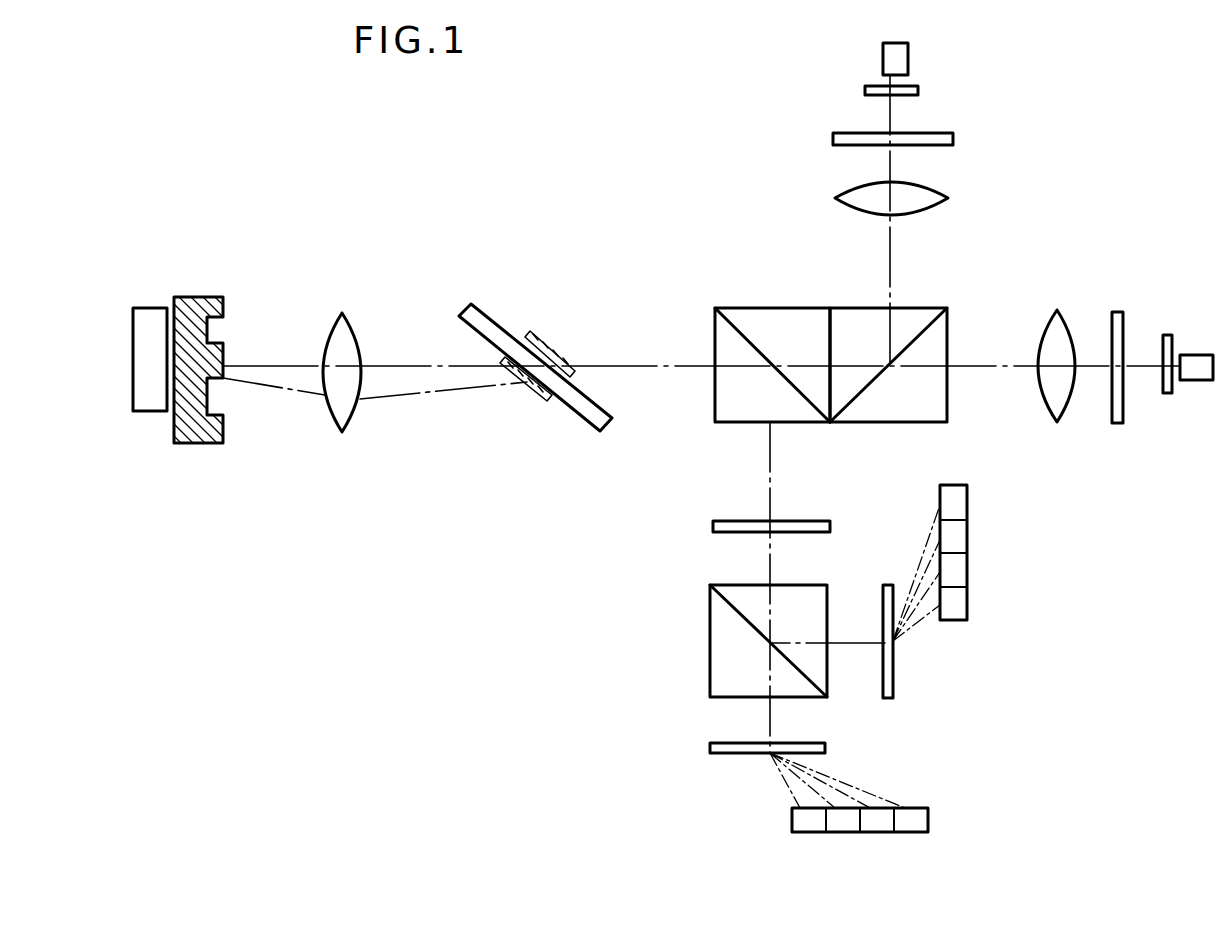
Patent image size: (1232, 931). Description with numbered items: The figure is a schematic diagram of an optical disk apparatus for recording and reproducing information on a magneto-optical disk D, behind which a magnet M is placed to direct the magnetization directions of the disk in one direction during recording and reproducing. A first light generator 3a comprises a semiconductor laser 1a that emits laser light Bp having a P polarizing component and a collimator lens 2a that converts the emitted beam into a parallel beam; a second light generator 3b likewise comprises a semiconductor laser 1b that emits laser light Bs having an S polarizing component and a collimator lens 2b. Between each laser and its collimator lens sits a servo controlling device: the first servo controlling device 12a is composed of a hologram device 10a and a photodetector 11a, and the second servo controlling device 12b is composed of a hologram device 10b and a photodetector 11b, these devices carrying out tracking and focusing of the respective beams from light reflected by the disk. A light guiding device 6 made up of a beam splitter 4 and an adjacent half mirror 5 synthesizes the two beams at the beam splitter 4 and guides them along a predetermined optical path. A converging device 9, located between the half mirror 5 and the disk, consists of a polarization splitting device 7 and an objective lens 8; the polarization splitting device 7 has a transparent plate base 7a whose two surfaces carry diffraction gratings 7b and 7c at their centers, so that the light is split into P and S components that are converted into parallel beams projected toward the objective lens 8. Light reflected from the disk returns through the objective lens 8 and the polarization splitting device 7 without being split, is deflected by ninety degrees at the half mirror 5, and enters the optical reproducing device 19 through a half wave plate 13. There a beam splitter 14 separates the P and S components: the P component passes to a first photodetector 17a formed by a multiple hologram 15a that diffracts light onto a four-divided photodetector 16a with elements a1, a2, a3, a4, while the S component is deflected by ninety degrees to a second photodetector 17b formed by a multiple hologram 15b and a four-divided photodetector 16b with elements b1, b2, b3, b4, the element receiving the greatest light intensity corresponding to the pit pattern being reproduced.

The magnet M is at (133, 340).
The magneto-optical disk D is at (174, 432).
The laser light having a P polarizing component Bp is at (313, 355).
The laser light having an S polarizing component Bs is at (311, 400).
The converging device 9 is at (472, 232).
The objective lens 8 is at (345, 325).
The polarization splitting device 7 is at (487, 303).
The base 7a is at (590, 430).
The diffraction grating 7b is at (548, 350).
The diffraction grating 7c is at (530, 395).
The light guiding device 6 is at (793, 232).
The half mirror 5 is at (735, 308).
The beam splitter 4 is at (872, 308).
The first light generator 3a is at (732, 80).
The semiconductor laser 1a is at (883, 60).
The collimator lens 2a is at (838, 195).
The first servo controlling device 12a is at (1052, 78).
The photodetector 11a is at (918, 90).
The hologram device 10a is at (953, 138).
The second light generator 3b is at (1180, 480).
The semiconductor laser 1b is at (1195, 382).
The collimator lens 2b is at (1058, 418).
The second servo controlling device 12b is at (1207, 233).
The photodetector 11b is at (1165, 335).
The hologram device 10b is at (1113, 310).
The optical reproducing device 19 is at (618, 650).
The half wave plate 13 is at (730, 521).
The beam splitter 14 is at (715, 585).
The second photodetector 17b is at (1075, 735).
The multiple hologram 15b is at (893, 690).
The four-divided photodetector 16b is at (970, 620).
The element of the four-divided photodetector b1 is at (967, 605).
The element of the four-divided photodetector b2 is at (967, 572).
The element of the four-divided photodetector b3 is at (967, 540).
The element of the four-divided photodetector b4 is at (967, 505).
The first photodetector 17a is at (617, 773).
The multiple hologram 15a is at (720, 752).
The four-divided photodetector 16a is at (792, 822).
The element of the four-divided photodetector a1 is at (807, 854).
The element of the four-divided photodetector a2 is at (842, 854).
The element of the four-divided photodetector a3 is at (874, 854).
The element of the four-divided photodetector a4 is at (907, 854).